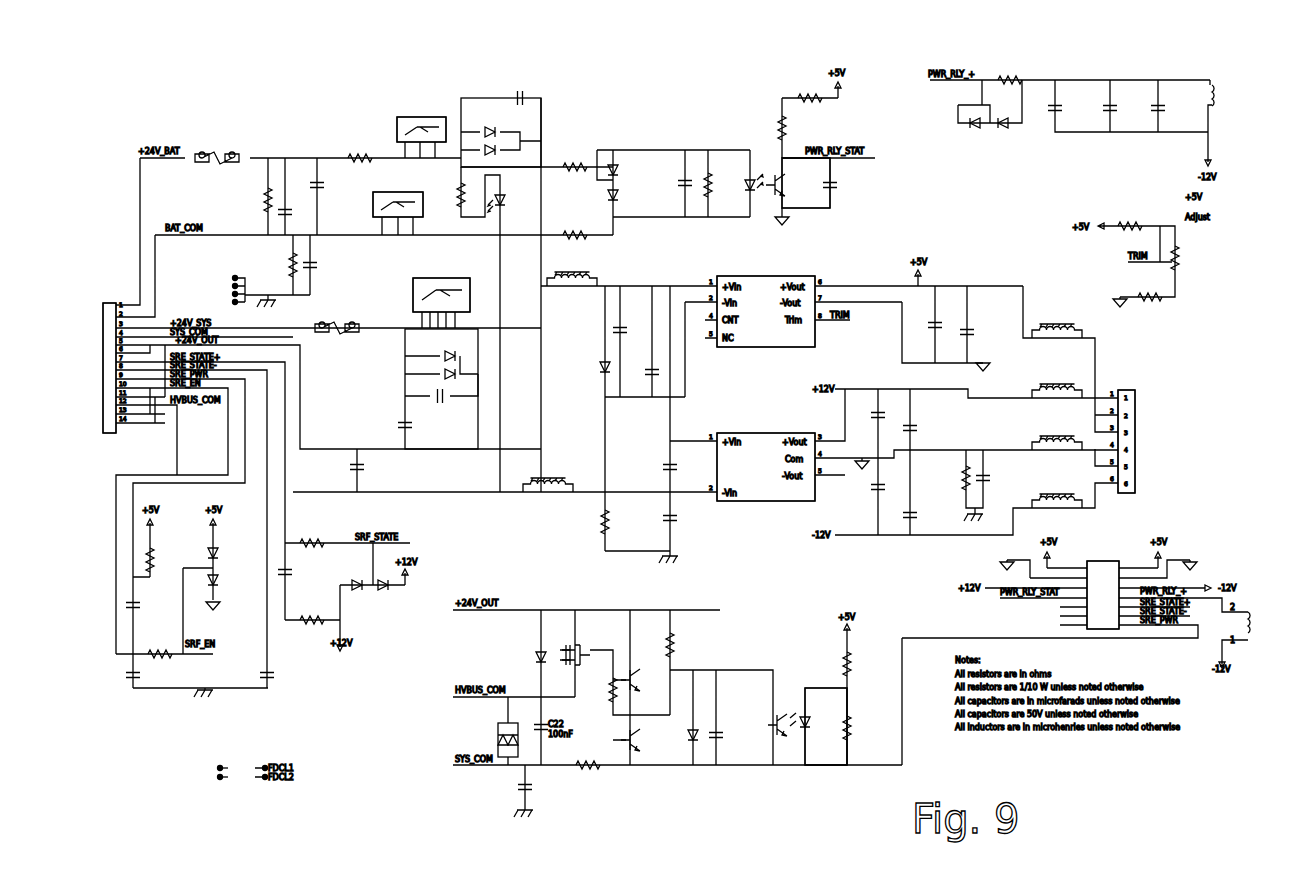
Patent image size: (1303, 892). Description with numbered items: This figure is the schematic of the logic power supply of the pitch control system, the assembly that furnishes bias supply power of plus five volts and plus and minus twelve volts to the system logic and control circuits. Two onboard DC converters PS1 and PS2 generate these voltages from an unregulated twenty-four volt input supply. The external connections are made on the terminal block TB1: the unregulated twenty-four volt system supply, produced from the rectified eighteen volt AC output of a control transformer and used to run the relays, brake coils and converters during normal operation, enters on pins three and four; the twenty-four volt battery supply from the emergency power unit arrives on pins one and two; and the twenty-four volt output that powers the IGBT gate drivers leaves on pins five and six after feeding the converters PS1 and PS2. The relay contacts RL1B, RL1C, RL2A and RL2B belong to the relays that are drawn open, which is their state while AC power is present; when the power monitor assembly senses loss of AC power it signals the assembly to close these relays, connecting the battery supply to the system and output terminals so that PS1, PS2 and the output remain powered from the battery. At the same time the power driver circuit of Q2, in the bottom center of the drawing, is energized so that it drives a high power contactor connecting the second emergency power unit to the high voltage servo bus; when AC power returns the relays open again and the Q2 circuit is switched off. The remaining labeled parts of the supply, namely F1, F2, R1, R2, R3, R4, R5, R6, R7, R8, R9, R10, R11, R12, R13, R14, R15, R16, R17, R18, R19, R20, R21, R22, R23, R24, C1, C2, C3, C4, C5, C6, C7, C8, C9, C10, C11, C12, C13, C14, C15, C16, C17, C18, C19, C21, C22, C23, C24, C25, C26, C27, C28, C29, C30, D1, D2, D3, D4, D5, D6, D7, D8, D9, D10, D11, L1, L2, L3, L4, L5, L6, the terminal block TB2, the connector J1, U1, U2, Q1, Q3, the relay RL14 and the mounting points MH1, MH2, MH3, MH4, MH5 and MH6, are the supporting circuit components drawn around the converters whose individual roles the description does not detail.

The fuse F1 5A F1 is at (218, 165).
The fuse F2 5A F2 is at (342, 334).
The resistor R1 2K R1 is at (810, 90).
The resistor R2 2K R2 is at (777, 126).
The resistor R3 0.25W R3 is at (359, 151).
The resistor R4 2K R4 is at (575, 177).
The resistor R5 2K R5 is at (713, 185).
The resistor R6 47K R6 is at (261, 198).
The resistor R7 2K R7 is at (575, 233).
The resistor R8 10K R8 is at (277, 265).
The resistor R9 1K R9 is at (1130, 218).
The resistor R10 681 R10 is at (1150, 308).
The resistor R11 200K R11 is at (947, 478).
The resistor R12 10K R12 is at (626, 522).
The resistor R13 100 R13 is at (312, 536).
The resistor R14 100 R14 is at (157, 558).
The resistor R15 47K R15 is at (855, 664).
The resistor R16 2K R16 is at (855, 727).
The resistor R17 100 R17 is at (312, 612).
The resistor R18 2K R18 is at (592, 764).
The resistor R19 100 R19 is at (160, 644).
The resistor R20 1K R20 is at (606, 687).
The resistor R21 47K R21 is at (664, 645).
The resistor R22 2K R22 is at (452, 195).
The resistor R23 357 R23 is at (1009, 71).
The potentiometer R24 1K R24 is at (1183, 258).
The capacitor C1 100nF C1 is at (518, 89).
The capacitor C2 220 C2 is at (323, 182).
The capacitor C3 100nF C3 is at (695, 182).
The capacitor C4 100nF C4 is at (842, 184).
The capacitor C5 1.0 C5 is at (290, 209).
The capacitor C6 22nF C6 is at (330, 264).
The capacitor C7 1.0 C7 is at (940, 322).
The capacitor C8 1500 C8 is at (629, 330).
The capacitor C9 220 C9 is at (973, 332).
The capacitor C10 1.0 C10 is at (644, 370).
The capacitor C11 100nF C11 is at (454, 398).
The capacitor C12 1.0 C12 is at (885, 414).
The capacitor C13 220 C13 is at (917, 427).
The capacitor C14 1.0 C14 is at (351, 464).
The capacitor C15 1.0 C15 is at (677, 467).
The capacitor C16 220 C16 is at (917, 522).
The capacitor C17 1.0 C17 is at (885, 487).
The capacitor C18 22nF C18 is at (1004, 475).
The capacitor C19 22nF C19 is at (691, 518).
The capacitor C21 100nF C21 is at (297, 570).
The capacitor C22 100nF C22 is at (145, 602).
The capacitor C23 22nF C23 is at (288, 673).
The capacitor C24 22nF C24 is at (155, 673).
The capacitor C25 100nF C25 is at (727, 738).
The capacitor C26 22nF C26 is at (506, 788).
The capacitor C27 10uF C27 is at (1067, 108).
The capacitor C28 10uF C28 is at (1122, 108).
The capacitor C29 10uF C29 is at (1170, 108).
The capacitor C30 22nF C30 is at (426, 423).
The diode bridge D1 BRD850 D1 is at (488, 129).
The diode D2 BAV199 D2 is at (629, 182).
The diode bridge D3 BRD850 D3 is at (437, 360).
The zener diode D4 33V D4 is at (597, 364).
The diode D5 BAV199 D5 is at (370, 596).
The diode D6 BRD850 D6 is at (486, 734).
The diode D7 BAV199 D7 is at (198, 563).
The zener diode D8 15V D8 is at (687, 737).
The zener diode D9 33V D9 is at (530, 659).
The red LED D10 battery power D10 is at (512, 204).
The diode D11 BAV199 D11 is at (983, 133).
The inductor L1 is at (574, 270).
The inductor L2 is at (1056, 320).
The inductor L3 is at (1056, 380).
The inductor L4 is at (1056, 432).
The inductor L5 is at (548, 475).
The inductor L6 is at (1064, 514).
The DC converter PS1 is at (766, 303).
The DC converter PS2 is at (766, 459).
The terminal block TB1 is at (135, 369).
The terminal block TB2 is at (1144, 426).
The connector J1 BCS-17 J1 is at (1102, 583).
The optocoupler U1 TLP181 U1 is at (806, 183).
The optocoupler U2 TLP181 U2 is at (813, 720).
The transistor Q1 4401 Q1 is at (640, 680).
The power driver circuit transistor Q2 is at (592, 642).
The transistor Q3 4403 Q3 is at (627, 739).
The relay contact RL1B is at (421, 119).
The relay contact RL1C is at (398, 195).
The relay coil RL2A is at (1224, 80).
The relay contact RL2B is at (441, 285).
The relay coil RL14 is at (1253, 607).
The mounting hole MH1 is at (226, 278).
The mounting hole MH2 is at (226, 286).
The mounting hole MH3 is at (226, 294).
The mounting hole MH4 is at (226, 302).
The mounting hole MH5 is at (212, 768).
The mounting hole MH6 is at (212, 777).